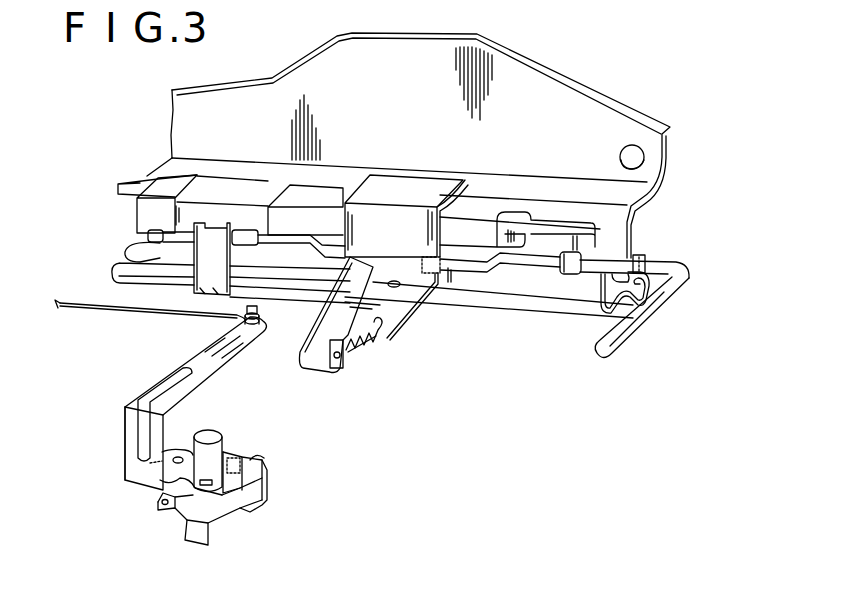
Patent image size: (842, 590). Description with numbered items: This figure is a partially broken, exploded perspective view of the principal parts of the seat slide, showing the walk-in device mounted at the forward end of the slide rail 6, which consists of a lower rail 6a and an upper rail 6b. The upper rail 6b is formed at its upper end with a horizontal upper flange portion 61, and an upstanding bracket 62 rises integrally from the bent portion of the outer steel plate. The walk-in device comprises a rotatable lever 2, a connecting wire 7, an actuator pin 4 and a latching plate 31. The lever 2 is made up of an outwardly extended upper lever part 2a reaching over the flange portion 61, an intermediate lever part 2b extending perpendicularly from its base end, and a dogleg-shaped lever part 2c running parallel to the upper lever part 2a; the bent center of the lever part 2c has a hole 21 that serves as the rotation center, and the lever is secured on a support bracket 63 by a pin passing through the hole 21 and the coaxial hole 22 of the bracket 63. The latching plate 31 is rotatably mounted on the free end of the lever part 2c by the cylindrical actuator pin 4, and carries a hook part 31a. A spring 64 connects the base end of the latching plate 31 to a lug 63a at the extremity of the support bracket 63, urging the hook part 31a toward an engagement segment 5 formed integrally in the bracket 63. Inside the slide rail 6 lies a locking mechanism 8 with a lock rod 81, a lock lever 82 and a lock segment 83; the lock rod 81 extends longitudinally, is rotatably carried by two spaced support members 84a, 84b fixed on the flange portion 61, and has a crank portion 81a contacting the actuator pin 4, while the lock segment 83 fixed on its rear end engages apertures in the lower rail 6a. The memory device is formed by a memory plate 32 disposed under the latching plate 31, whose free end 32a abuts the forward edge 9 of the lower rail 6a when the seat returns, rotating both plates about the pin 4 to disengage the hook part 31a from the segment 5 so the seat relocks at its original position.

The upstanding bracket 62 is at (269, 90).
The horizontal upper flange portion 61 is at (137, 190).
The support member 84b is at (124, 258).
The support member 84a is at (565, 275).
The connecting wire 7 is at (107, 310).
The lock segment 83 is at (250, 300).
The rotatable lever plate 2 is at (143, 388).
The upper lever part 2a is at (197, 352).
The intermediate lever part 2b is at (125, 449).
The dogleg-shaped lever part 2c is at (181, 449).
The hole 21 is at (170, 470).
The actuator pin 4 is at (213, 440).
The latching plate 31 is at (188, 522).
The hook part 31a is at (232, 458).
The memory plate 32 is at (268, 500).
The free end of memory plate 32a is at (260, 460).
The support bracket 63 is at (305, 355).
The lug 63a is at (335, 372).
The spring 64 is at (378, 347).
The hole 22 is at (397, 290).
The engagement segment 5 is at (430, 275).
The locking mechanism 8 is at (452, 322).
The lock rod 81 is at (486, 302).
The crank portion 81a is at (452, 272).
The slide rail 6 is at (545, 300).
The lower rail 6a is at (590, 307).
The upper rail 6b is at (600, 313).
The forward edge of lower rail 9 is at (642, 264).
The lock lever 82 is at (633, 335).